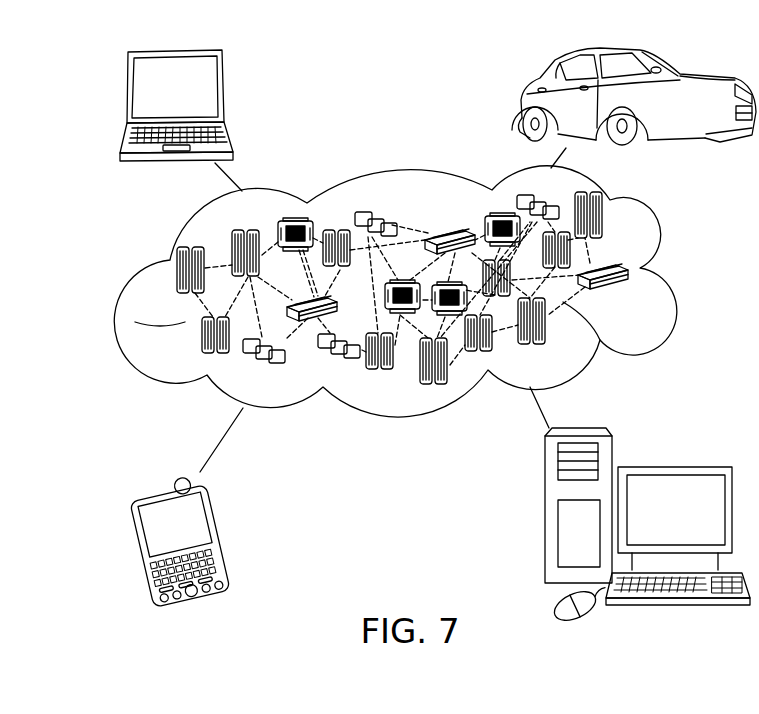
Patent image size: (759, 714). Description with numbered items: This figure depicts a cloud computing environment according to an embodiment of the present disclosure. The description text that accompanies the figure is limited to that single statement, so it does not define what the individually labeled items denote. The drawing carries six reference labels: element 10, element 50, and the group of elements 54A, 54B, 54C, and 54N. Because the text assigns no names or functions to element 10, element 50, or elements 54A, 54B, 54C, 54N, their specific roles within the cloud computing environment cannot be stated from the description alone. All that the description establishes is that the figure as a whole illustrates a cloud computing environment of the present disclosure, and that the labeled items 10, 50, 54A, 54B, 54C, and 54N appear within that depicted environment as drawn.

The cloud computing node 10 is at (439, 288).
The cloud computing environment 50 is at (672, 276).
The personal digital assistant or cellular telephone 54A is at (224, 536).
The desktop computer 54B is at (674, 465).
The laptop computer 54C is at (223, 94).
The automobile computer system 54N is at (521, 102).